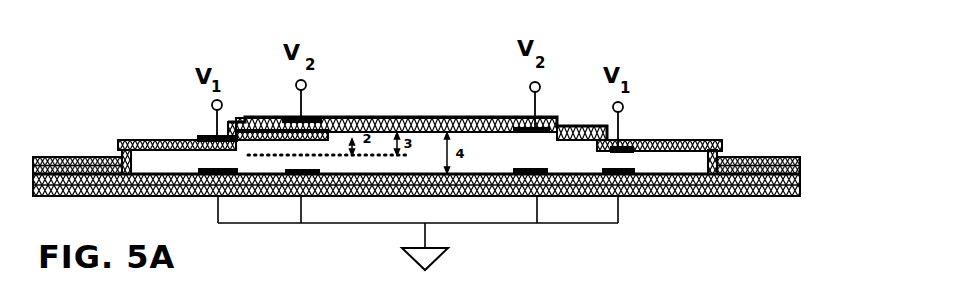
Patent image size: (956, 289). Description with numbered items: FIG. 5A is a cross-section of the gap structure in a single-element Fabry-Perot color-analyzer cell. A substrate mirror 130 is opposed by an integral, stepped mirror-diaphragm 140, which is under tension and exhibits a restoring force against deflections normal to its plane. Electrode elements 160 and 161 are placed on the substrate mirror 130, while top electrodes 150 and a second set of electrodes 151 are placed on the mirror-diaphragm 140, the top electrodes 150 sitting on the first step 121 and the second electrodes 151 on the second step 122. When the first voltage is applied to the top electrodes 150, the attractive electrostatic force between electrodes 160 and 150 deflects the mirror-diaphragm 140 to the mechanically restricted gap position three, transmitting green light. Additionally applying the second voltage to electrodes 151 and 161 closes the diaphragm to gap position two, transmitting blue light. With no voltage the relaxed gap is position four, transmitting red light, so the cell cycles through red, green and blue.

The first step 121 is at (157, 139).
The second step 122 is at (252, 122).
The substrate mirror 130 is at (805, 188).
The mirror-diaphragm 140 is at (77, 156).
The top electrodes 150 is at (200, 136).
The second set of electrodes 151 is at (318, 120).
The electrode elements 160 is at (230, 197).
The electrode elements 161 is at (313, 197).